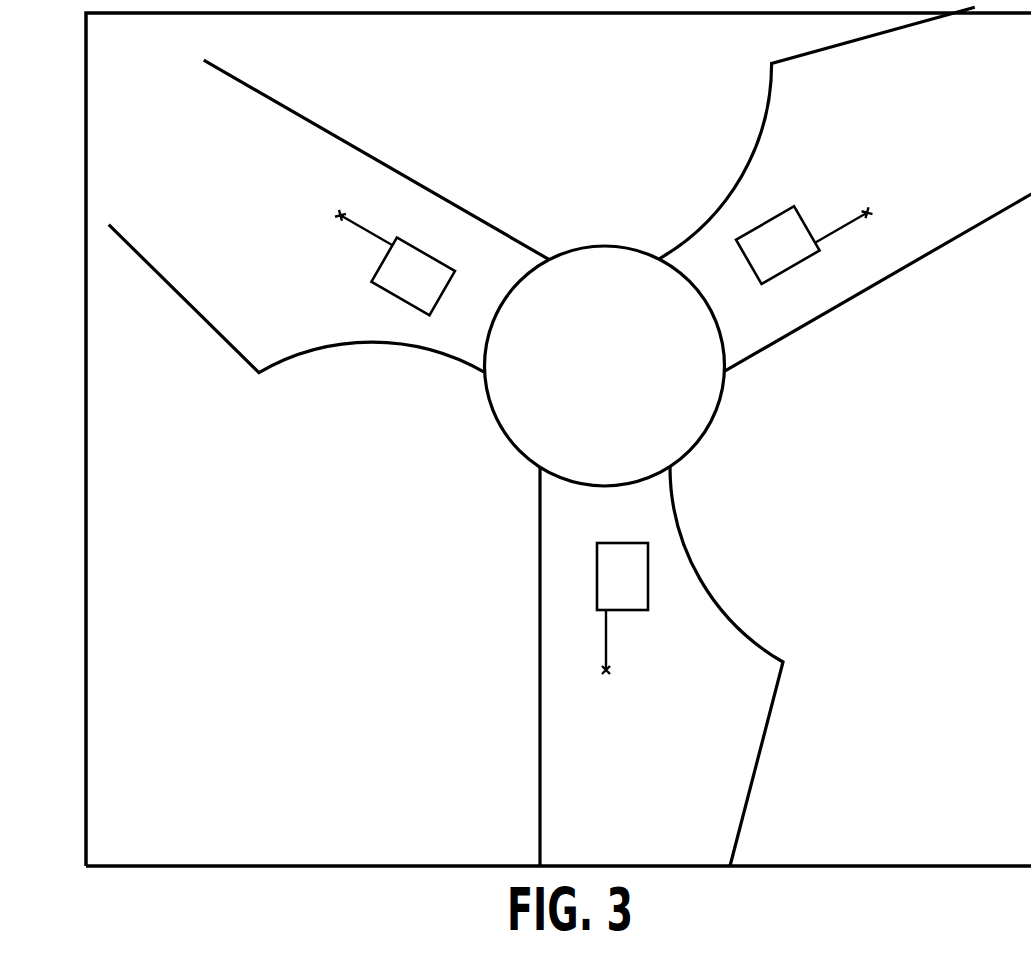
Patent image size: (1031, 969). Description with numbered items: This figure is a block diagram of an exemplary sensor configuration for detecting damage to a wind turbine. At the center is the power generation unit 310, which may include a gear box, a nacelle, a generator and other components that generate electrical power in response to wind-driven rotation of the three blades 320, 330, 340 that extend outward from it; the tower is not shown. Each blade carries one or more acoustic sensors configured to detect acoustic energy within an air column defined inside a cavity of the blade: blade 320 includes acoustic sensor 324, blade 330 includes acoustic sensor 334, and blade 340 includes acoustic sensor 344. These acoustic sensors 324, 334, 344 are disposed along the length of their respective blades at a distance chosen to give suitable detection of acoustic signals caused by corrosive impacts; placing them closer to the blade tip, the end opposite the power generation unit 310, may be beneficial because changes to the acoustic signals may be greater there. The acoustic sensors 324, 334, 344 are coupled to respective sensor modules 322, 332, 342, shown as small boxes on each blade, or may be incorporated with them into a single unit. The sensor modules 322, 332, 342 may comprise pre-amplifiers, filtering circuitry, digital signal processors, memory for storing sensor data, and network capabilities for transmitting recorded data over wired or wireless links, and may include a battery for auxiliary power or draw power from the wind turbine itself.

The power generation unit 310 is at (492, 408).
The blade 320 is at (773, 65).
The sensor module 322 is at (766, 223).
The acoustic sensor 324 is at (870, 212).
The blade 330 is at (357, 147).
The sensor module 332 is at (444, 292).
The acoustic sensor 334 is at (340, 213).
The blade 340 is at (540, 832).
The sensor module 342 is at (597, 567).
The acoustic sensor 344 is at (604, 670).